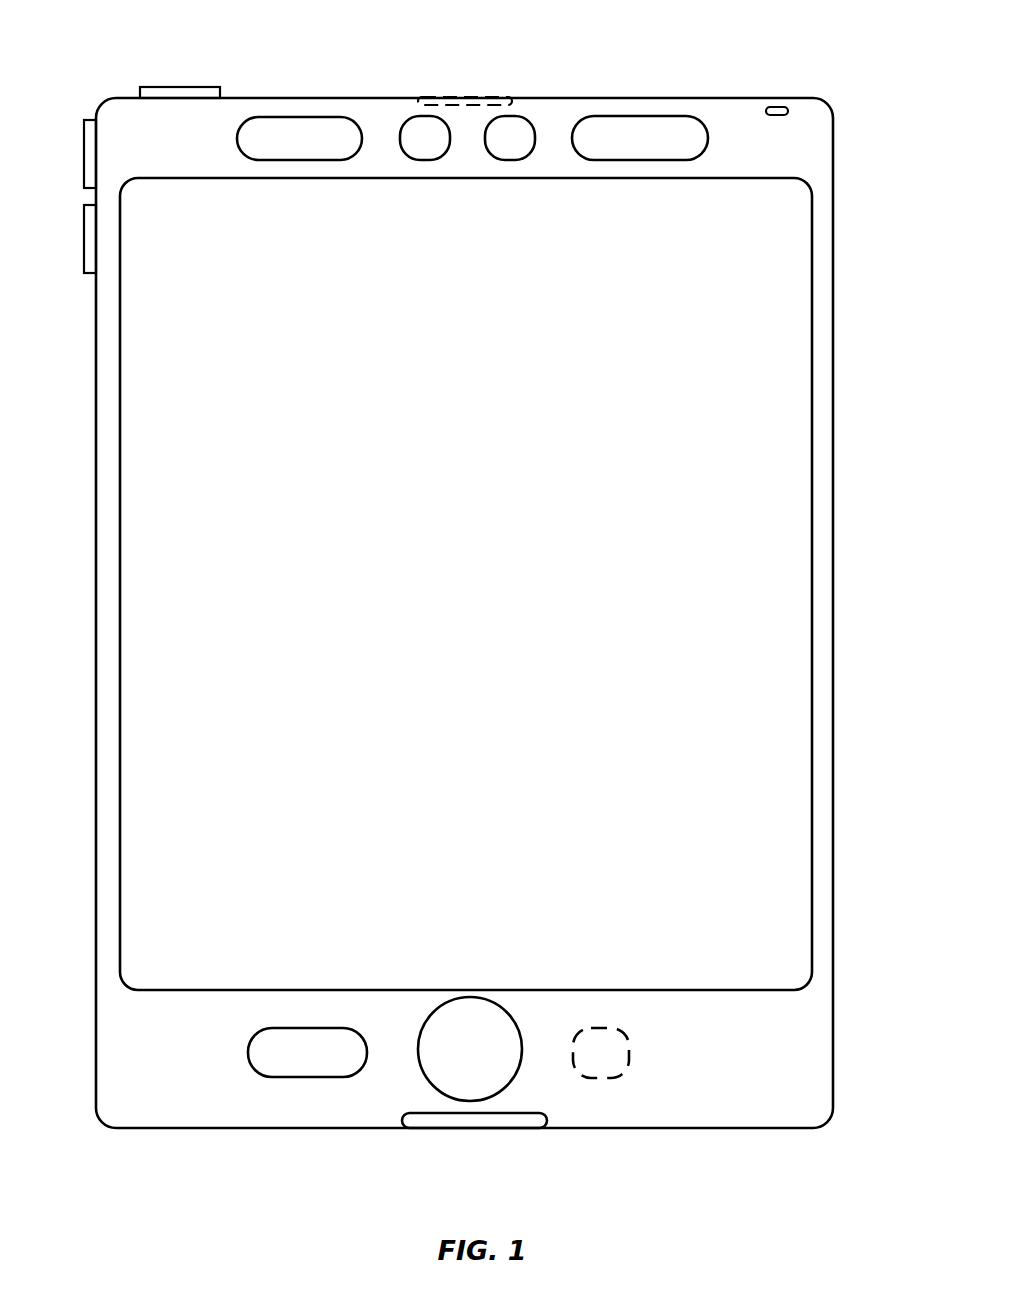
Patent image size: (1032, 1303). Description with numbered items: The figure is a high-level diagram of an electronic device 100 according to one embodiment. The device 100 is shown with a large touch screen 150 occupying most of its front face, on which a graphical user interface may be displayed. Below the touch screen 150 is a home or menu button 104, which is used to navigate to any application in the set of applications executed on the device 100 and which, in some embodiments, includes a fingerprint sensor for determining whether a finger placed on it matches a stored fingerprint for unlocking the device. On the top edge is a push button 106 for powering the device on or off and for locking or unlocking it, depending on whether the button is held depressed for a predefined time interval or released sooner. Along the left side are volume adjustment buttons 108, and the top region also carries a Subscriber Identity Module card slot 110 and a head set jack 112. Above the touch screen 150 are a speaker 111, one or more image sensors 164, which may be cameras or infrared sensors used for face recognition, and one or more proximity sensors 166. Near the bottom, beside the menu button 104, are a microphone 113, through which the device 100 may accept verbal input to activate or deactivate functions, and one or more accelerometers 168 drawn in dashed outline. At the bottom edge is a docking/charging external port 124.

The electronic device 100 is at (868, 98).
The menu button 104 is at (470, 1049).
The push button 106 is at (175, 87).
The volume adjustment buttons 108 is at (84, 152).
The Subscriber Identity Module (SIM) card slot 110 is at (466, 97).
The speaker 111 is at (299, 138).
The head set jack 112 is at (777, 107).
The microphone 113 is at (307, 1052).
The docking/charging external port 124 is at (476, 1128).
The touch screen 150 is at (812, 478).
The image sensors 164 is at (467, 138).
The proximity sensors 166 is at (640, 138).
The accelerometers 168 is at (601, 1053).